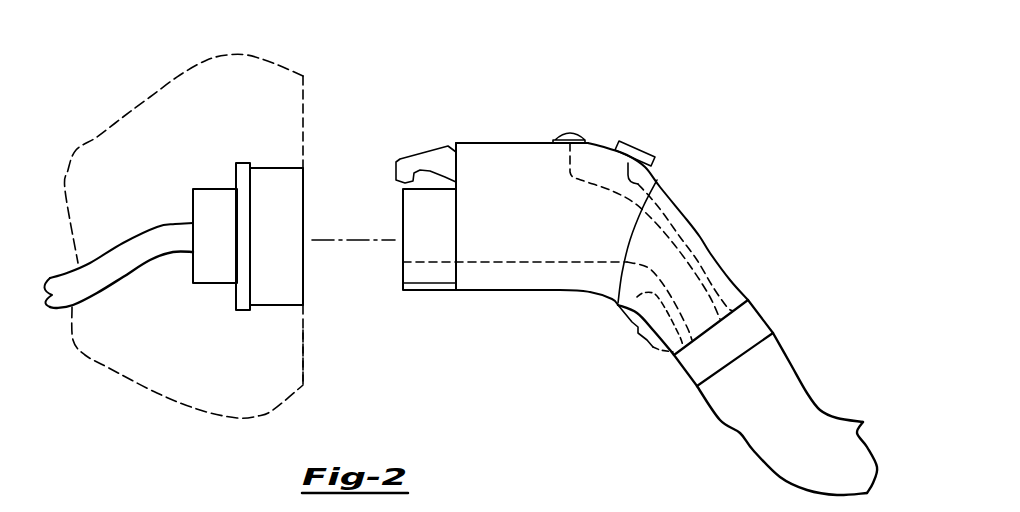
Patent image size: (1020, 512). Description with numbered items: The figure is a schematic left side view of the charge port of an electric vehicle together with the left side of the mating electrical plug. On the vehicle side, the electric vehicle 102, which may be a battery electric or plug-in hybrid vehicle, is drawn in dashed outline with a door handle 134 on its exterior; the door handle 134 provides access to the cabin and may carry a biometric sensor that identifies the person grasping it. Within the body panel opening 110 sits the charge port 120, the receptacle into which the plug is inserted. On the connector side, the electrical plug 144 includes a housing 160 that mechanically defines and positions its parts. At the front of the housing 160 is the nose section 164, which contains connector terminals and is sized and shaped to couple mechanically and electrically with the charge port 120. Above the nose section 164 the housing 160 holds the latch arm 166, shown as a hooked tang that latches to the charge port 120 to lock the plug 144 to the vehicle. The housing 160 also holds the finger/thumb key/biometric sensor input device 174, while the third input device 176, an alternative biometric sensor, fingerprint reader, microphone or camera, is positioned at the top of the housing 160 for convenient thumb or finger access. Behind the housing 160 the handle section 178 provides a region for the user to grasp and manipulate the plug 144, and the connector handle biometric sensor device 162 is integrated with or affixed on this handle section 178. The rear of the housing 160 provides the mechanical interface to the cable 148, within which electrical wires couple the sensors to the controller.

The electric vehicle 102 is at (307, 87).
The body panel opening 110 is at (303, 305).
The charge port 120 is at (297, 188).
The door handle 134 is at (158, 223).
The electrical plug 144 is at (497, 130).
The cable 148 is at (738, 433).
The housing 160 is at (531, 141).
The connector handle biometric sensor device 162 is at (730, 263).
The nose section 164 is at (430, 292).
The latch arm 166 is at (428, 146).
The finger/thumb key/biometric sensor input device 174 is at (638, 147).
The third input device 176 is at (570, 130).
The handle section 178 is at (634, 324).